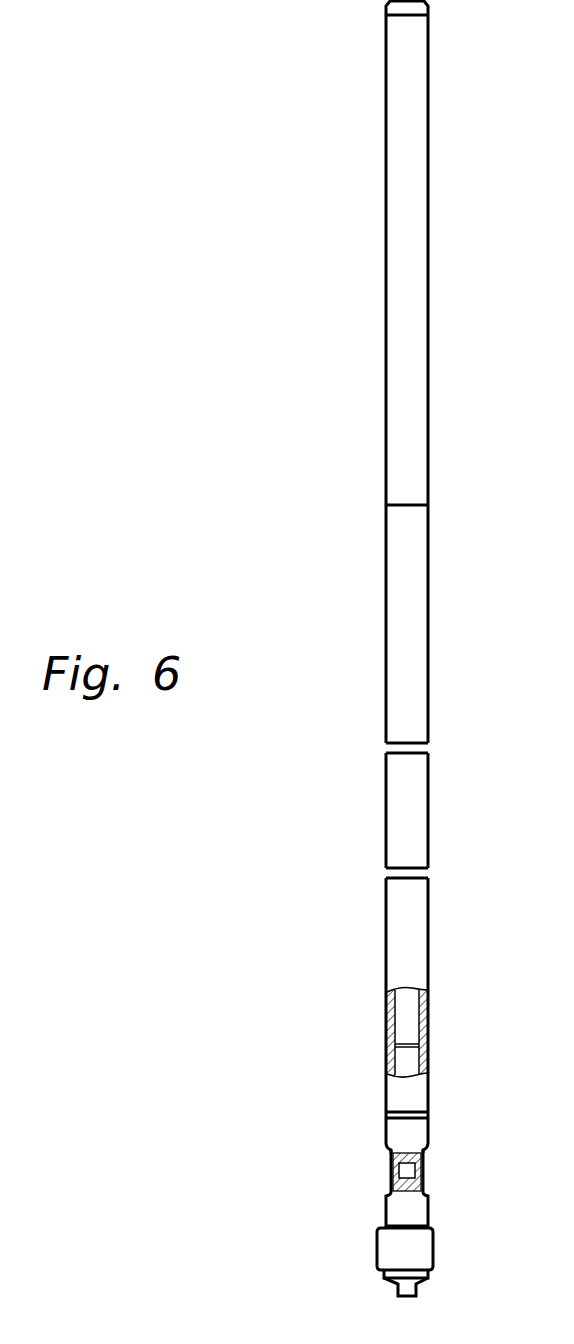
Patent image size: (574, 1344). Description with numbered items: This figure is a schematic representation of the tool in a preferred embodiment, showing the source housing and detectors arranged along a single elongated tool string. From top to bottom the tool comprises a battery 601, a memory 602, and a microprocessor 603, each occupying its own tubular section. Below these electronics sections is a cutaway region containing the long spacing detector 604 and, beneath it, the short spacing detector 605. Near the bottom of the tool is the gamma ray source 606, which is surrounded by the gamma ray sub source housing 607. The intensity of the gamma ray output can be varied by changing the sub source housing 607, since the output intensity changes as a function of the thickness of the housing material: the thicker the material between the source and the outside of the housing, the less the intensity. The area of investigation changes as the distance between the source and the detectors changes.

The battery 601 is at (429, 276).
The memory 602 is at (429, 623).
The microprocessor 603 is at (429, 803).
The long spacing detector 604 is at (405, 1023).
The short spacing detector 605 is at (405, 1063).
The gamma ray source 606 is at (415, 1178).
The gamma ray sub source housing 607 is at (410, 1172).